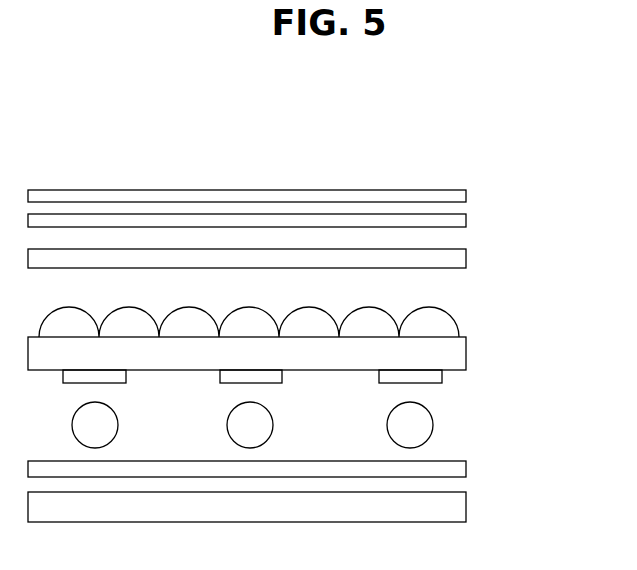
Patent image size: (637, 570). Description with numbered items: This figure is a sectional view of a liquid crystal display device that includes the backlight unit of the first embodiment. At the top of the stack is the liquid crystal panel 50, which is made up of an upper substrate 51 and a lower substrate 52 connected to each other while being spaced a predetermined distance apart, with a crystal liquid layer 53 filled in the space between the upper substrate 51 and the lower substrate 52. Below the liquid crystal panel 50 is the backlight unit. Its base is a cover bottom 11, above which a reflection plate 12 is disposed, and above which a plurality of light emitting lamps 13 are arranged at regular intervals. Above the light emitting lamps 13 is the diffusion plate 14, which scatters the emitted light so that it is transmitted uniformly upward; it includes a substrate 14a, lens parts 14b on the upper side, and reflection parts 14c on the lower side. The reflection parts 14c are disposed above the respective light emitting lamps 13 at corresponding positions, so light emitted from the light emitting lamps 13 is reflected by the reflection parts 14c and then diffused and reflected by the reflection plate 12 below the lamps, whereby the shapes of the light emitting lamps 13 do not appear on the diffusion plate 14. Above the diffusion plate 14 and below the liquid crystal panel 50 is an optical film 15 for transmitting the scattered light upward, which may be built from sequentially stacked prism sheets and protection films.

The cover bottom 11 is at (462, 505).
The reflection plate 12 is at (462, 468).
The light emitting lamps 13 is at (425, 425).
The diffusion plate 14 is at (324, 355).
The substrate 14a is at (462, 352).
The lens parts 14b is at (447, 326).
The reflection parts 14c is at (440, 378).
The optical film 15 is at (462, 258).
The liquid crystal panel 50 is at (555, 178).
The upper substrate 51 is at (466, 196).
The lower substrate 52 is at (466, 226).
The crystal liquid layer 53 is at (462, 218).